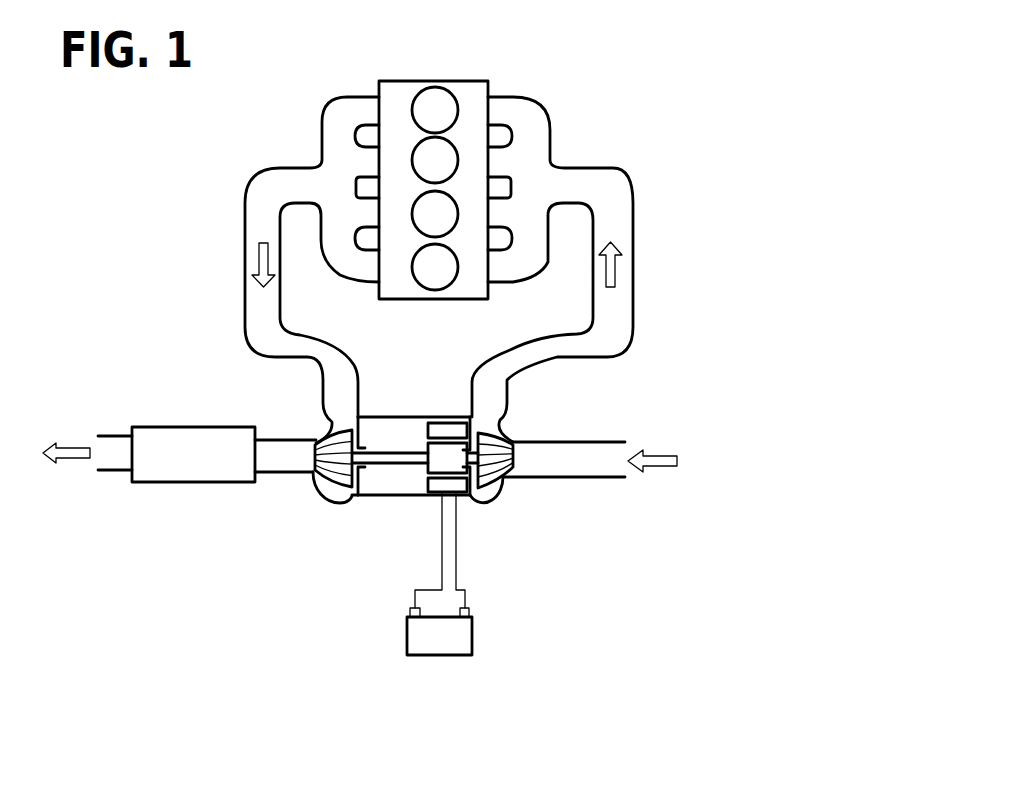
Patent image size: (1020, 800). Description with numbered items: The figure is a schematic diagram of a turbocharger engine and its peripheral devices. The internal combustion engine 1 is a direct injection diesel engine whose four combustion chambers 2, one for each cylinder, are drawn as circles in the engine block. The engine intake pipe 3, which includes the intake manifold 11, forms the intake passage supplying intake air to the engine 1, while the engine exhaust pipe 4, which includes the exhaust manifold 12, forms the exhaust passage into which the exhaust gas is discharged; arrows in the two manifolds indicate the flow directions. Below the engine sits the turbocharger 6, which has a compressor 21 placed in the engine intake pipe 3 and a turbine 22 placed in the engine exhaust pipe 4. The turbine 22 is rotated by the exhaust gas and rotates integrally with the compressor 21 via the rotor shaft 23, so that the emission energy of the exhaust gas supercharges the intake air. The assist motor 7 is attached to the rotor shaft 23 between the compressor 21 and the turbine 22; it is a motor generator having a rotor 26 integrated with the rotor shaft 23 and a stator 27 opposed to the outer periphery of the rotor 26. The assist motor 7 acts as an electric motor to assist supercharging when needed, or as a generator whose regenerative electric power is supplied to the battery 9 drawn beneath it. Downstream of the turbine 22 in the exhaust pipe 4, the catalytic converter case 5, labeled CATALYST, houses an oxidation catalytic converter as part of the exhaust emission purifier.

The internal combustion engine 1 is at (410, 80).
The combustion chambers 2 is at (437, 107).
The engine intake pipe 3 is at (613, 357).
The engine exhaust pipe 4 is at (280, 363).
The catalytic converter case 5 is at (170, 482).
The turbocharger 6 is at (327, 513).
The assist motor 7 is at (417, 502).
The battery 9 is at (472, 633).
The intake manifold 11 is at (517, 98).
The exhaust manifold 12 is at (327, 113).
The compressor 21 is at (503, 503).
The turbine 22 is at (320, 477).
The rotor shaft 23 is at (388, 453).
The rotor 26 is at (426, 432).
The stator 27 is at (427, 494).